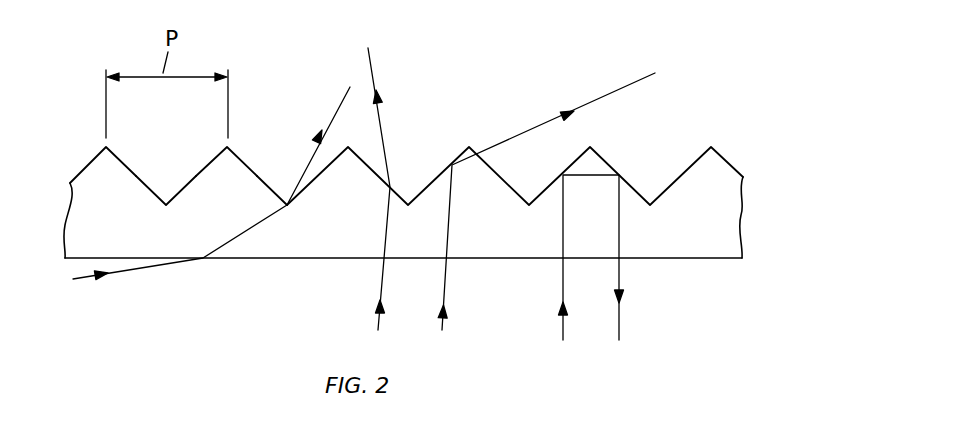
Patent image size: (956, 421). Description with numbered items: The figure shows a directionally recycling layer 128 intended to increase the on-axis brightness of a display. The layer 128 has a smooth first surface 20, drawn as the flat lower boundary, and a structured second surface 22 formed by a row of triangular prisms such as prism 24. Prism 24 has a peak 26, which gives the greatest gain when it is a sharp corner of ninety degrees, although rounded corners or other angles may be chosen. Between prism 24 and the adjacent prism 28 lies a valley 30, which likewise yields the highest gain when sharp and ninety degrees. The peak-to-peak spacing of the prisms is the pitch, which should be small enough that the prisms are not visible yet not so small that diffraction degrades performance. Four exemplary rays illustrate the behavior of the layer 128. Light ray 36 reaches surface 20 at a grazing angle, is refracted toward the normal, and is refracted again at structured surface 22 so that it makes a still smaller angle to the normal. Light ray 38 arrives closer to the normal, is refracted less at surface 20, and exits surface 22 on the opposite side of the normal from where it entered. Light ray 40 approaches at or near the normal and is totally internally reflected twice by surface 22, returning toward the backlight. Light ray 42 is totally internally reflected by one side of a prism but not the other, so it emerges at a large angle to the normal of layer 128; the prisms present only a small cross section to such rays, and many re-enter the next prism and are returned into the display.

The first surface 20 is at (278, 260).
The second surface 22 is at (208, 167).
The prism 24 is at (86, 175).
The peak 26 is at (101, 144).
The adjacent prism 28 is at (252, 179).
The valley 30 is at (166, 200).
The light ray 36 is at (138, 270).
The light ray 38 is at (381, 284).
The light ray 40 is at (563, 328).
The light ray 42 is at (443, 285).
The layer 128 is at (755, 205).